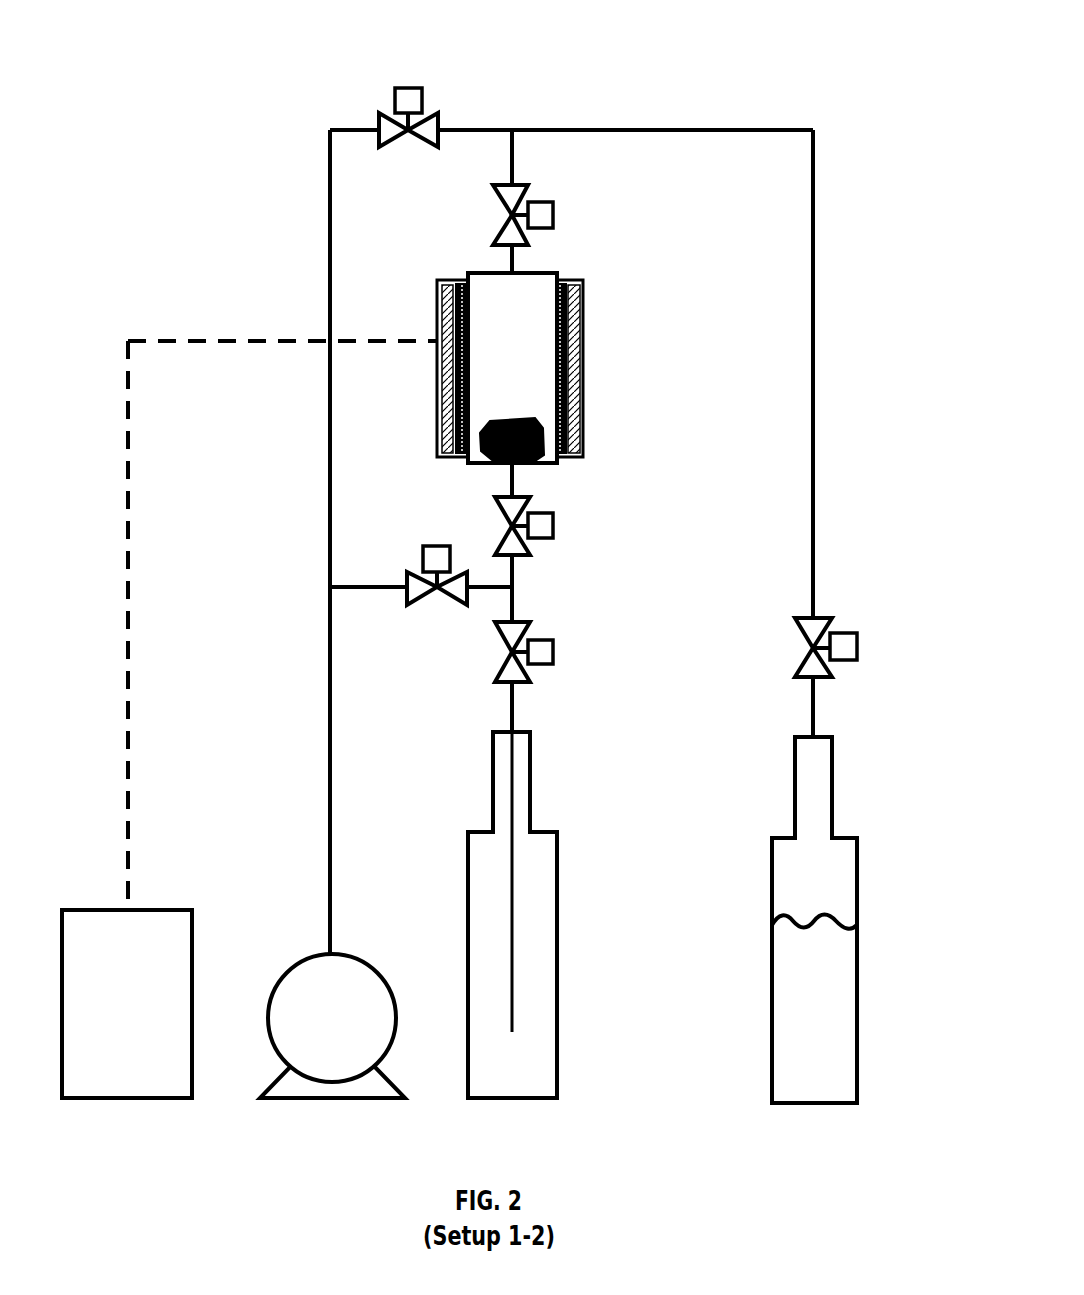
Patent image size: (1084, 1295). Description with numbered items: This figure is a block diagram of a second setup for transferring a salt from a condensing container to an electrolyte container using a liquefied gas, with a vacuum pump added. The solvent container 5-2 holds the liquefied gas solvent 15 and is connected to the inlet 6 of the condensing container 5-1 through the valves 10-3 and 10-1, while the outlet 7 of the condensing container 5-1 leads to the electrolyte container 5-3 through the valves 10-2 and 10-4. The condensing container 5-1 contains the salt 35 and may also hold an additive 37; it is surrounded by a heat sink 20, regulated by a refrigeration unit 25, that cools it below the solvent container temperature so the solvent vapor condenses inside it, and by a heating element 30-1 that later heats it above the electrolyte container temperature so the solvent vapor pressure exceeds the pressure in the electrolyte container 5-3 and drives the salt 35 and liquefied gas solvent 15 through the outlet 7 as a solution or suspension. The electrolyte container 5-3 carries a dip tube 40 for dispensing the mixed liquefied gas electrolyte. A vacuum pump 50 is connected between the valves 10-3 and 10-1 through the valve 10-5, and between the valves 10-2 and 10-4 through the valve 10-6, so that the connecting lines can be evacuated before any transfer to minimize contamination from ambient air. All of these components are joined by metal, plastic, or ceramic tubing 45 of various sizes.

The valve 10-5 is at (412, 88).
The valve 10-1 is at (553, 212).
The valve 10-2 is at (553, 522).
The valve 10-3 is at (845, 635).
The valve 10-4 is at (553, 650).
The valve 10-6 is at (437, 588).
The inlet 6 is at (510, 274).
The outlet 7 is at (500, 464).
The condensing container 5-1 is at (540, 275).
The heating element 30-1 is at (583, 335).
The heat sink 20 is at (583, 400).
The salt 35 is at (443, 421).
The additive 37 is at (482, 430).
The dip tube 40 is at (515, 767).
The electrolyte container 5-3 is at (557, 900).
The solvent container 5-2 is at (857, 955).
The liquefied gas solvent 15 is at (833, 868).
The tubing 45 is at (815, 368).
The vacuum pump 50 is at (340, 955).
The refrigeration unit 25 is at (192, 925).